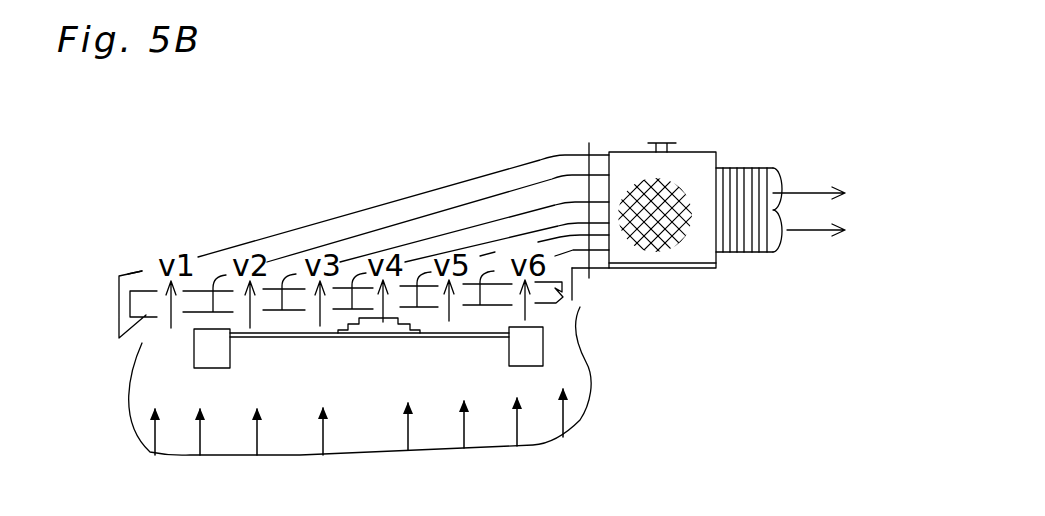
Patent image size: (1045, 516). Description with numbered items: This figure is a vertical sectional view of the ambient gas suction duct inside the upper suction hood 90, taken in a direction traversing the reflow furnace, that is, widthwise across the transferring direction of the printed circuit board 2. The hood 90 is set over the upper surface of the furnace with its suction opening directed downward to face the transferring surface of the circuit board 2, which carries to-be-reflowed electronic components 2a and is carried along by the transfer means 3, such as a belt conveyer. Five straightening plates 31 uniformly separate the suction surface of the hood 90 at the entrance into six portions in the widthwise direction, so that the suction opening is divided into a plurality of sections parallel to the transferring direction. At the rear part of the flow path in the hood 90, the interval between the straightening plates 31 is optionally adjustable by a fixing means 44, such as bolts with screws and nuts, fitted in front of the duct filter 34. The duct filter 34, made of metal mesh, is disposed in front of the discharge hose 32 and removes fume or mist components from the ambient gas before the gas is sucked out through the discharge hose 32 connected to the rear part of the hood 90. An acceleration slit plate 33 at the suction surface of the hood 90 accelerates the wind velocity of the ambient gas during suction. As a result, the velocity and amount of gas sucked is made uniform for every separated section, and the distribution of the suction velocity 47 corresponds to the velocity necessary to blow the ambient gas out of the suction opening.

The printed circuit board 2 is at (260, 340).
The electronic components 2a is at (368, 327).
The transfer means 3 is at (173, 347).
The straightening plates 31 is at (577, 245).
The discharge hose 32 is at (743, 178).
The acceleration slit plate 33 is at (142, 300).
The duct filter 34 is at (688, 165).
The fixing means 44 is at (591, 149).
The distribution of the suction velocity 47 is at (592, 368).
The upper suction hood 90 is at (380, 203).